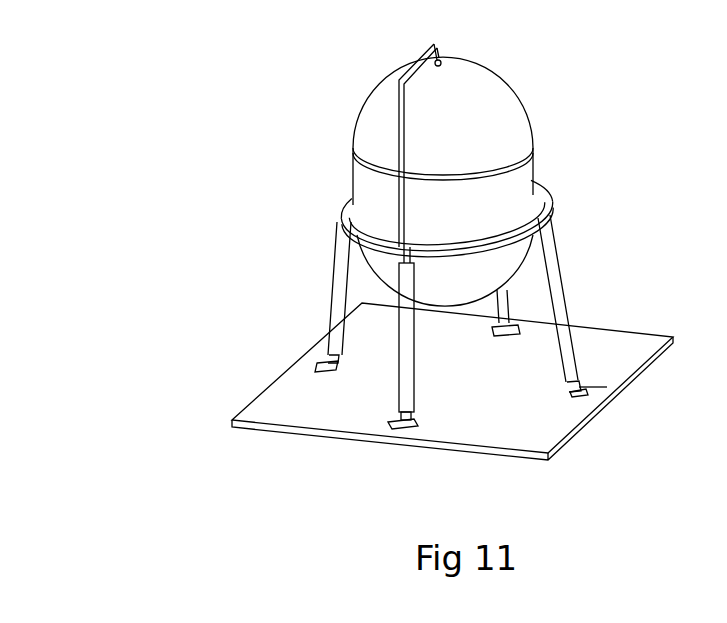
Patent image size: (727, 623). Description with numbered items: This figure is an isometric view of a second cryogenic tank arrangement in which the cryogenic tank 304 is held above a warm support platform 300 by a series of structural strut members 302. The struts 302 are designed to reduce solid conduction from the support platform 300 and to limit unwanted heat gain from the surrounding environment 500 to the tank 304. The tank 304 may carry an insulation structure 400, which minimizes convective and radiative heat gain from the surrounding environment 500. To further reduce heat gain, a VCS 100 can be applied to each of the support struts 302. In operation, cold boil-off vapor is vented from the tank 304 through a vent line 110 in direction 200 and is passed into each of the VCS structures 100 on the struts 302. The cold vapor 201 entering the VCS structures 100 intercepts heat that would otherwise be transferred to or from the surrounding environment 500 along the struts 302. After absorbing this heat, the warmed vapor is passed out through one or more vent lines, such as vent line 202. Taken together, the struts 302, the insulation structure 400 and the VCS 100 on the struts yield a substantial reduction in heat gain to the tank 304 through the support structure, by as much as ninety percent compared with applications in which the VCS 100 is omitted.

The surrounding environment 500 is at (150, 133).
The vent line 110 is at (412, 62).
The cold vapor 201 is at (412, 37).
The cryogenic tank 304 is at (377, 103).
The insulation structure 400 is at (500, 87).
The direction 200 is at (337, 97).
The VCS 100 is at (323, 261).
The structural strut member 302 is at (337, 310).
The vent line 202 is at (292, 352).
The support platform 300 is at (280, 412).